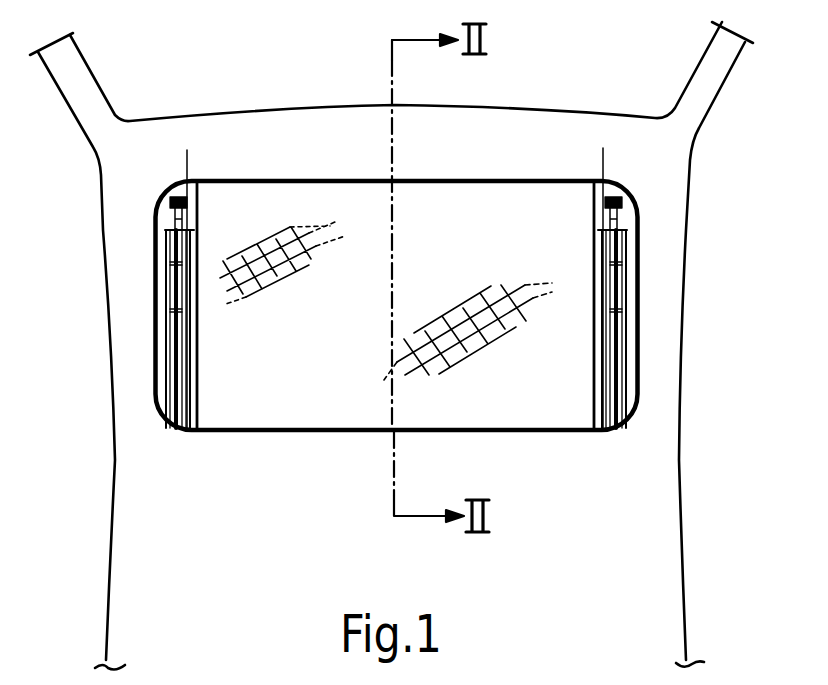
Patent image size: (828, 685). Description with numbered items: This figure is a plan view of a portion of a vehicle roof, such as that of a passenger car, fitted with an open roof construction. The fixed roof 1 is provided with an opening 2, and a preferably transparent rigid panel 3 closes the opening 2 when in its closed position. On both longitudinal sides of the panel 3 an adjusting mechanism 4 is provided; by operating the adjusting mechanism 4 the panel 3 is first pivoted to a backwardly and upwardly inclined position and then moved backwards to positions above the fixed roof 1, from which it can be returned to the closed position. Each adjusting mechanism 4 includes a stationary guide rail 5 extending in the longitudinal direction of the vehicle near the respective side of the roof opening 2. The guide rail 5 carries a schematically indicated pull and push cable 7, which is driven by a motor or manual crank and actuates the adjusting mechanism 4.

The fixed roof 1 is at (236, 150).
The opening 2 is at (308, 186).
The rigid panel 3 is at (401, 311).
The adjusting mechanism 4 is at (152, 298).
The stationary guide rail 5 is at (170, 238).
The pull and push cable 7 is at (187, 163).